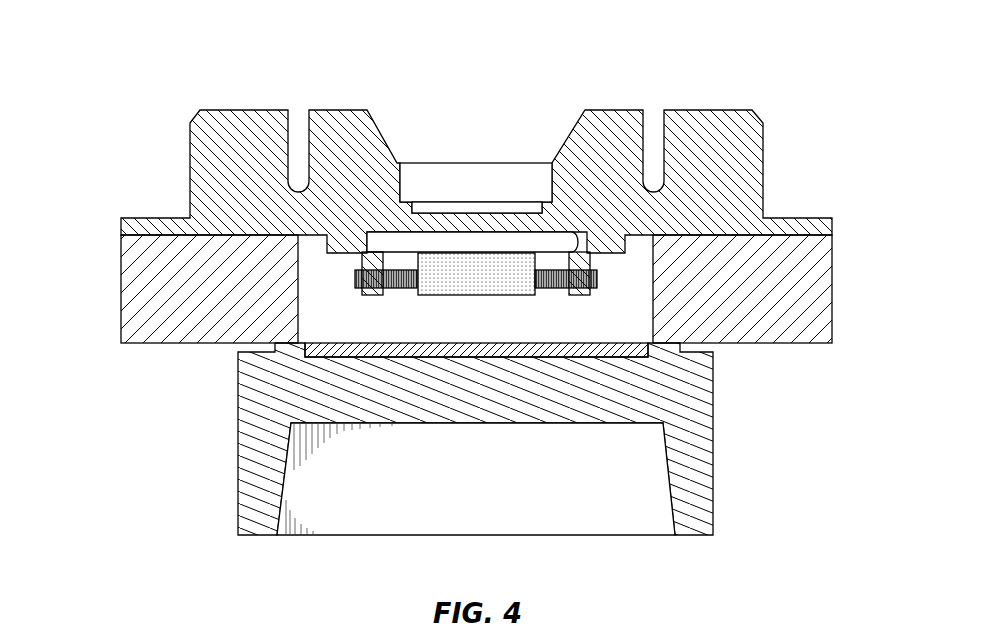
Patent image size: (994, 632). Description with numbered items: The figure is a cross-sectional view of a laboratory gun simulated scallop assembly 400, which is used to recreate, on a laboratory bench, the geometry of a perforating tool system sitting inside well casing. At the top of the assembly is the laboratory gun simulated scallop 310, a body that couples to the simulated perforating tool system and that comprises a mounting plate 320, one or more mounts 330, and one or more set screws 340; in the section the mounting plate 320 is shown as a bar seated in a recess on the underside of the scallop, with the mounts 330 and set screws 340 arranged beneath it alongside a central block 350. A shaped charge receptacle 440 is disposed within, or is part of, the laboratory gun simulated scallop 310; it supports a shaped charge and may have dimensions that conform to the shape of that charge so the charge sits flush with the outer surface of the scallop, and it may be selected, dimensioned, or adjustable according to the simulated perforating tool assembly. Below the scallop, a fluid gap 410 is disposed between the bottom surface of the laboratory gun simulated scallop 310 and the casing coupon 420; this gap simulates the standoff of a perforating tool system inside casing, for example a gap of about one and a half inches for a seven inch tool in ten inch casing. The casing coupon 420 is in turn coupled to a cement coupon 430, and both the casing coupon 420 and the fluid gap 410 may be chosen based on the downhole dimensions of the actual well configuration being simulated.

The laboratory gun simulated scallop assembly 400 is at (473, 291).
The laboratory gun simulated scallop 310 is at (713, 128).
The mounting plate 320 is at (485, 238).
The mount 330 is at (380, 292).
The set screw 340 is at (412, 290).
The sensor element 350 is at (508, 292).
The fluid gap 410 is at (130, 290).
The casing coupon 420 is at (638, 402).
The cement coupon 430 is at (600, 510).
The shaped charge receptacle 440 is at (455, 178).